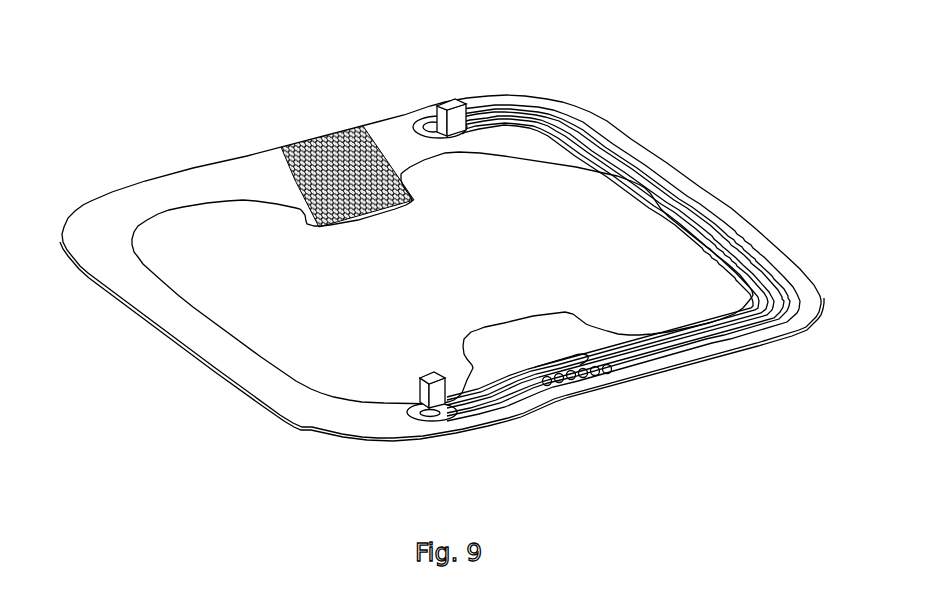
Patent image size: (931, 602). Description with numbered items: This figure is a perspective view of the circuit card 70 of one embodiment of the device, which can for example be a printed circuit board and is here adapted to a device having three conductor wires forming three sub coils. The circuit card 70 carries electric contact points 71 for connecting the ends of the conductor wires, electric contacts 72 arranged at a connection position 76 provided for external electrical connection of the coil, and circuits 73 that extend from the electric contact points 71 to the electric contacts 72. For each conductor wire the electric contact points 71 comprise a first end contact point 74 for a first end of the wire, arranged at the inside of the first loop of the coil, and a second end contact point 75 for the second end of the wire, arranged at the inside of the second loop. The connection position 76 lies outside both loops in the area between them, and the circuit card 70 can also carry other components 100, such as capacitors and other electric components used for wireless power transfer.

The circuit card 70 is at (100, 223).
The electric contact points 71 is at (437, 247).
The electric contacts 72 is at (599, 400).
The circuits 73 is at (729, 207).
The first end contact point 74 is at (433, 400).
The second end contact point 75 is at (447, 103).
The connection position 76 is at (603, 381).
The other components 100 is at (288, 145).